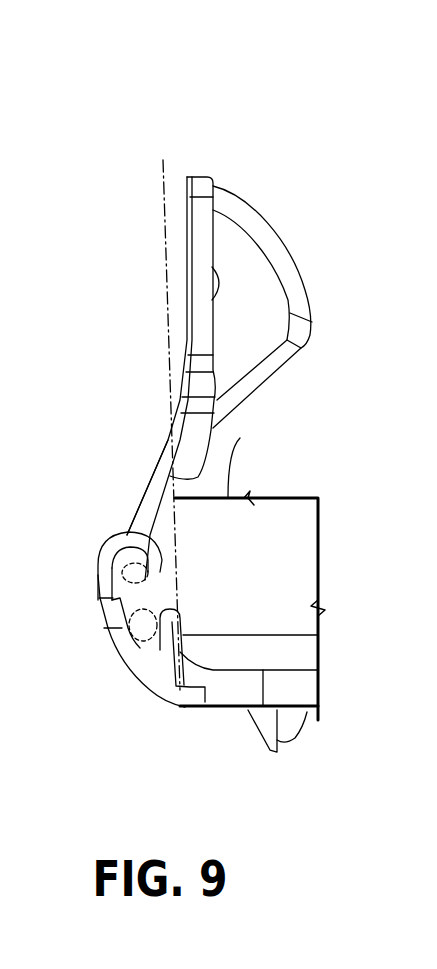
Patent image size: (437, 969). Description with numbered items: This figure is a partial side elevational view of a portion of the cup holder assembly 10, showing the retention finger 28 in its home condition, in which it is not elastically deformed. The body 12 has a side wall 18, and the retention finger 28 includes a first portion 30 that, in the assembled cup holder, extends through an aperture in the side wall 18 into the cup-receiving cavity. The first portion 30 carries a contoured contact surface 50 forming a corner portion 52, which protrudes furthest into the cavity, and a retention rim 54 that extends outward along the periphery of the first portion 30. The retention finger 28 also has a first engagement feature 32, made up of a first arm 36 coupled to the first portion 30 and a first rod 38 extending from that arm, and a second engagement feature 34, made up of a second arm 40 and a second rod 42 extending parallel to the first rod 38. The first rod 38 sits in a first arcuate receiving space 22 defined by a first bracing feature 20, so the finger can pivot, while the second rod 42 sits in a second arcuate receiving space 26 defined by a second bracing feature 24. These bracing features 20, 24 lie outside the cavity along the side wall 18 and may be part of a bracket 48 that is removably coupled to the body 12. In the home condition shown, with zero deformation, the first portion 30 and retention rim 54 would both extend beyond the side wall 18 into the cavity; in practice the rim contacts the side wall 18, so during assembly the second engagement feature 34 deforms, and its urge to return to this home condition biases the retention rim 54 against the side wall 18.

The cup holder assembly 10 is at (321, 177).
The body 12 is at (296, 524).
The side wall 18 is at (163, 173).
The first bracing feature 20 is at (140, 657).
The first arcuate receiving space 22 is at (160, 645).
The second bracing feature 24 is at (118, 553).
The second arcuate receiving space 26 is at (134, 550).
The retention finger 28 is at (221, 175).
The first portion 30 is at (231, 254).
The first engagement feature 32 is at (164, 576).
The second engagement feature 34 is at (138, 489).
The first arm 36 is at (240, 438).
The first rod 38 is at (103, 640).
The second arm 40 is at (153, 457).
The second rod 42 is at (92, 582).
The bracket 48 is at (214, 692).
The contoured contact surface 50 is at (293, 276).
The corner portion 52 is at (311, 326).
The retention rim 54 is at (212, 267).